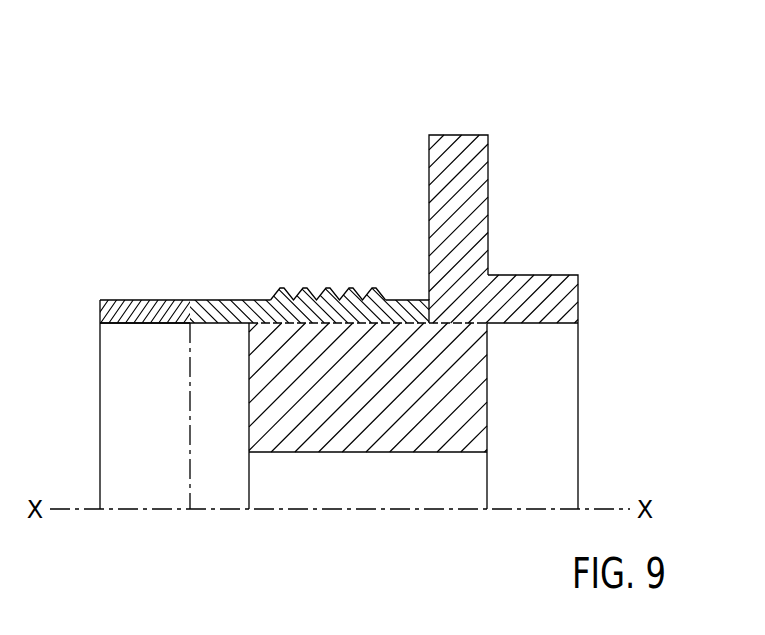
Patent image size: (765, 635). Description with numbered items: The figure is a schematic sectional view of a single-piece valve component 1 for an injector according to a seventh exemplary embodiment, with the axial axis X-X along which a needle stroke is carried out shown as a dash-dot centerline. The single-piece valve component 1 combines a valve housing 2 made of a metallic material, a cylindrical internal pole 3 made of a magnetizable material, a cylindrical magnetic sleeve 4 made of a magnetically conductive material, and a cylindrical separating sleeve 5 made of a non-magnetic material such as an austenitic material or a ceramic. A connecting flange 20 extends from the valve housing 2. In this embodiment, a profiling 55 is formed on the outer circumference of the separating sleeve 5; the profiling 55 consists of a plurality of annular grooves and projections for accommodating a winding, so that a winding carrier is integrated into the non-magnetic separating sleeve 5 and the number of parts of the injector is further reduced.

The single-piece valve component 1 is at (190, 117).
The valve housing 2 is at (458, 160).
The cylindrical internal pole 3 is at (335, 398).
The cylindrical magnetic sleeve 4 is at (145, 308).
The cylindrical separating sleeve 5 is at (222, 308).
The profiling 55 is at (341, 299).
The connecting flange 20 is at (538, 297).